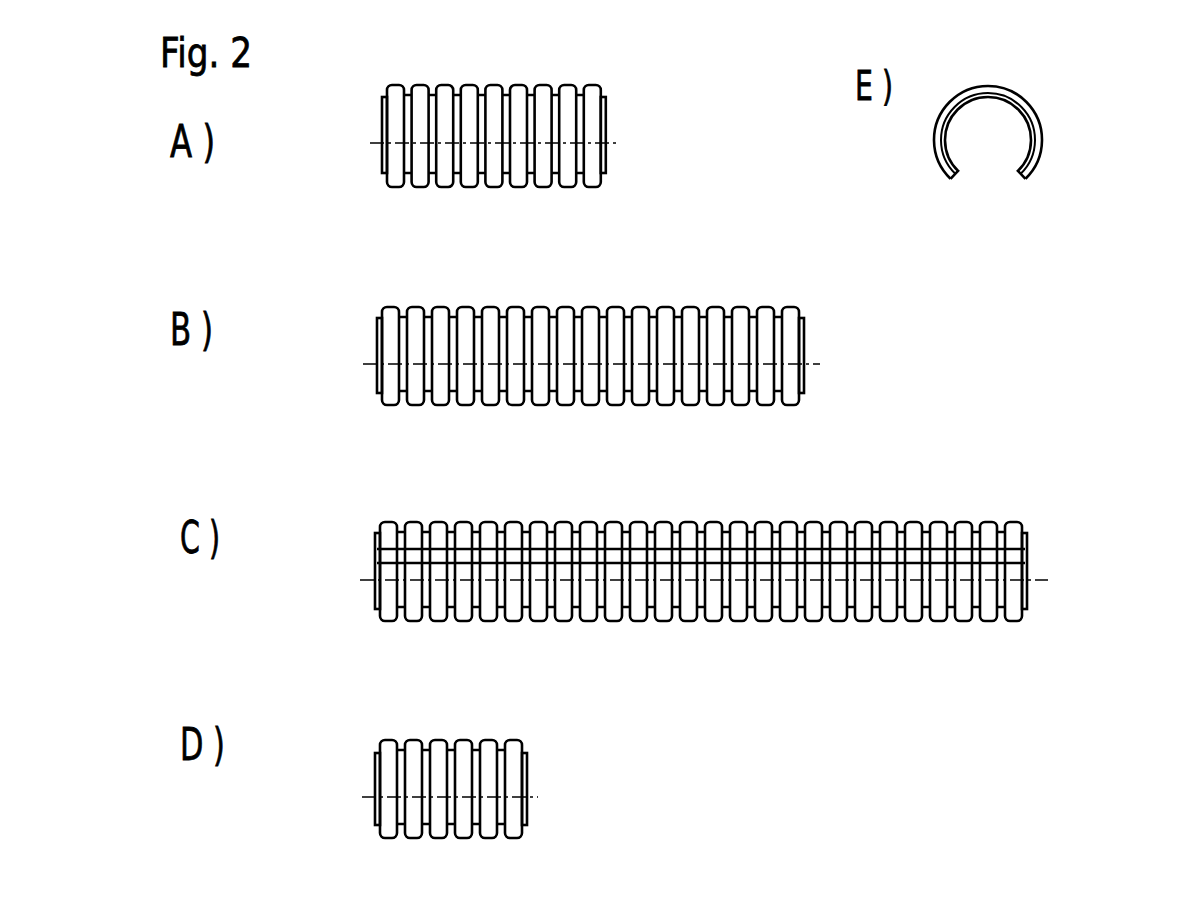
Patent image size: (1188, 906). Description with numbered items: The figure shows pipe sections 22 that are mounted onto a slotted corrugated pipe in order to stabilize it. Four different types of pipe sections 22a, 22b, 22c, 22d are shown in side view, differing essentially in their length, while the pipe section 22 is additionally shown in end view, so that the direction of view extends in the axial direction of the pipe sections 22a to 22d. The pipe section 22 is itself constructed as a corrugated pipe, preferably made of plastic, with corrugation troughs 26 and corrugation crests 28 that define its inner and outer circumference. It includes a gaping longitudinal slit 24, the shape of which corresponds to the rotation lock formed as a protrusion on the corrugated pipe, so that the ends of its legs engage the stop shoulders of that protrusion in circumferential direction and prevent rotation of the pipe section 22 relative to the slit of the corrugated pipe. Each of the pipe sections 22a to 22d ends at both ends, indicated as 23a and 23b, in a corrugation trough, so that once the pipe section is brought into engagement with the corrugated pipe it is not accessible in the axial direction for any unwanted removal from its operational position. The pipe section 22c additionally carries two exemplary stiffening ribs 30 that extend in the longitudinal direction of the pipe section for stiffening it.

In FIG. 2E, the pipe section 22 is at (1028, 177).
In FIG. 2A, the pipe section 22a is at (593, 123).
In FIG. 2B, the pipe section 22b is at (793, 340).
In FIG. 2C, the pipe section 22c is at (1013, 602).
In FIG. 2D, the pipe section 22d is at (510, 807).
In FIG. 2A, the first end of tube 23a is at (383, 158).
In FIG. 2B, the first end of tube 23a is at (378, 377).
In FIG. 2C, the first end of tube 23a is at (377, 595).
In FIG. 2D, the first end of tube 23a is at (377, 777).
In FIG. 2A, the second end of tube 23b is at (605, 158).
In FIG. 2B, the second end of tube 23b is at (805, 375).
In FIG. 2C, the second end of tube 23b is at (1027, 550).
In FIG. 2D, the second end of tube 23b is at (523, 770).
In FIG. 2E, the gaping longitudinal slit 24 is at (990, 177).
In FIG. 2E, the corrugation troughs 26 is at (1032, 143).
In FIG. 2E, the corrugation crests 28 is at (1041, 119).
In FIG. 2C, the stiffening ribs 30 is at (950, 537).